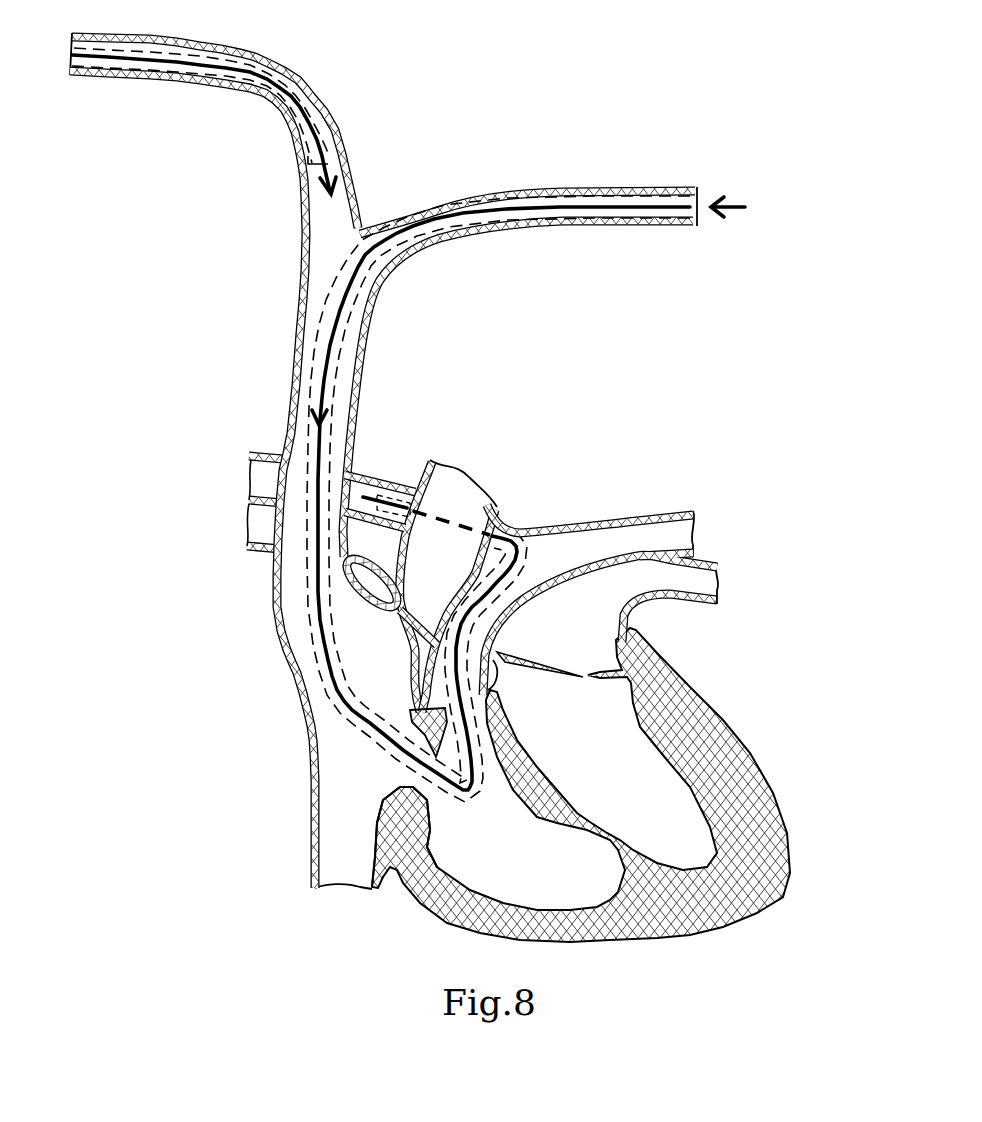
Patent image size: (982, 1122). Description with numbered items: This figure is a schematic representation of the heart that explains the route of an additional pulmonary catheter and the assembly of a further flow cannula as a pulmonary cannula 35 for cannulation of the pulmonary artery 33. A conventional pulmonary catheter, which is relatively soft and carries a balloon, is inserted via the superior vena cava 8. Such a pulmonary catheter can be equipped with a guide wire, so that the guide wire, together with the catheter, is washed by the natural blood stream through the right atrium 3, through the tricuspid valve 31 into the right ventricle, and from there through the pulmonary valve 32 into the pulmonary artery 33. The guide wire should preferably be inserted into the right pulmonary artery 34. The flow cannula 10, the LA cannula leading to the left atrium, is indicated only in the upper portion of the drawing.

The flow cannula 10 is at (318, 102).
The pulmonary cannula 35 is at (507, 219).
The right pulmonary artery 34 is at (373, 473).
The pulmonary artery 33 is at (536, 513).
The superior vena cava 8 is at (293, 553).
The right atrium 3 is at (300, 649).
The pulmonary valve 32 is at (438, 722).
The tricuspid valve 31 is at (397, 790).